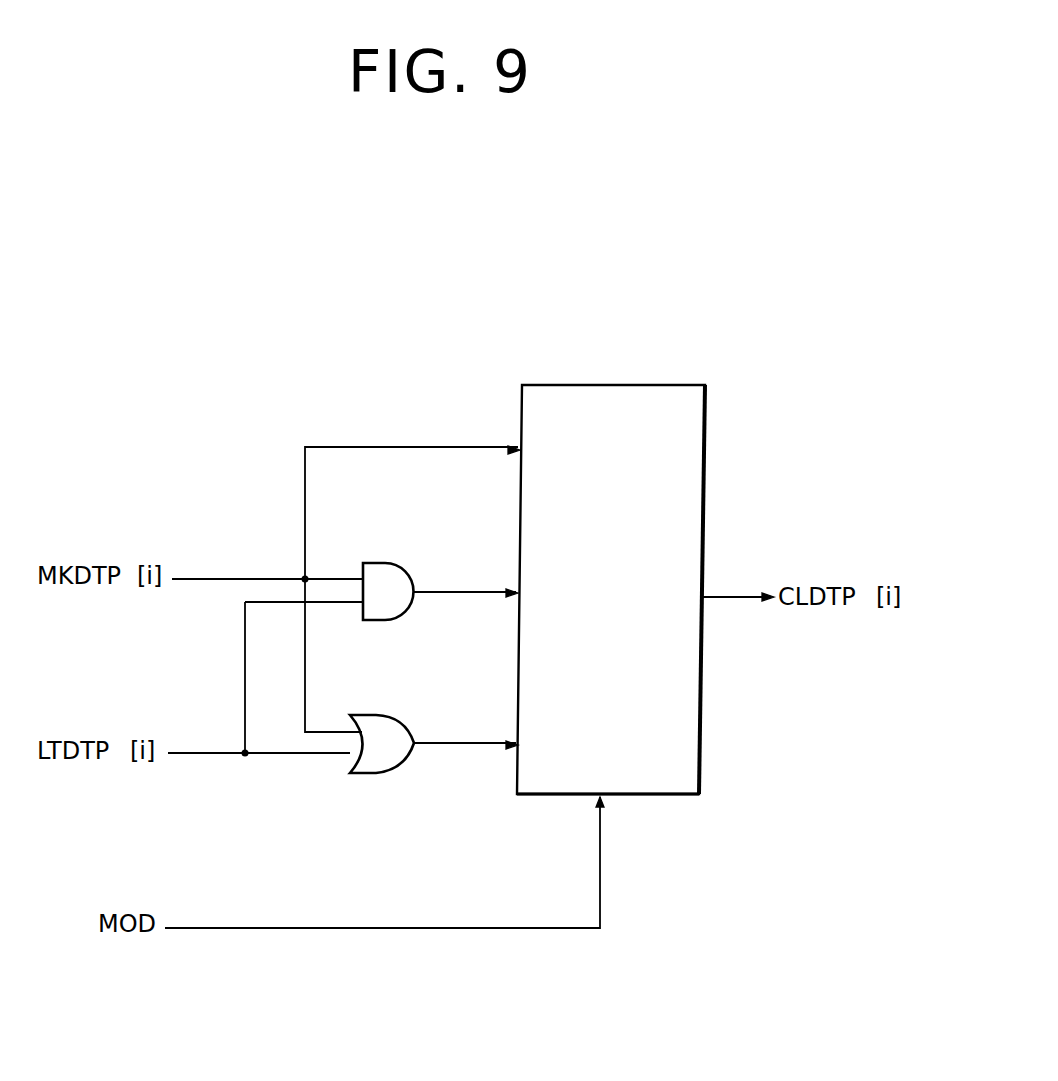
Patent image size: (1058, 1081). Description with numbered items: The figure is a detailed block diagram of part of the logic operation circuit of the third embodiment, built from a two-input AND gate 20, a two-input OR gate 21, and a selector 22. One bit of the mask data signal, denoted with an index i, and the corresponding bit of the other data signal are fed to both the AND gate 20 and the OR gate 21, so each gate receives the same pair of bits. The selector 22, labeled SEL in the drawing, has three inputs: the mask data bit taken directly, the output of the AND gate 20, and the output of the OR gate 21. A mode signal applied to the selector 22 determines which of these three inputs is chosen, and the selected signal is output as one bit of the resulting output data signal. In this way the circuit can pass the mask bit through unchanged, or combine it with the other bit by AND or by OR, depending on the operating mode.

The two-input AND gate 20 is at (378, 562).
The two-input OR gate 21 is at (377, 774).
The selector 22 is at (705, 436).